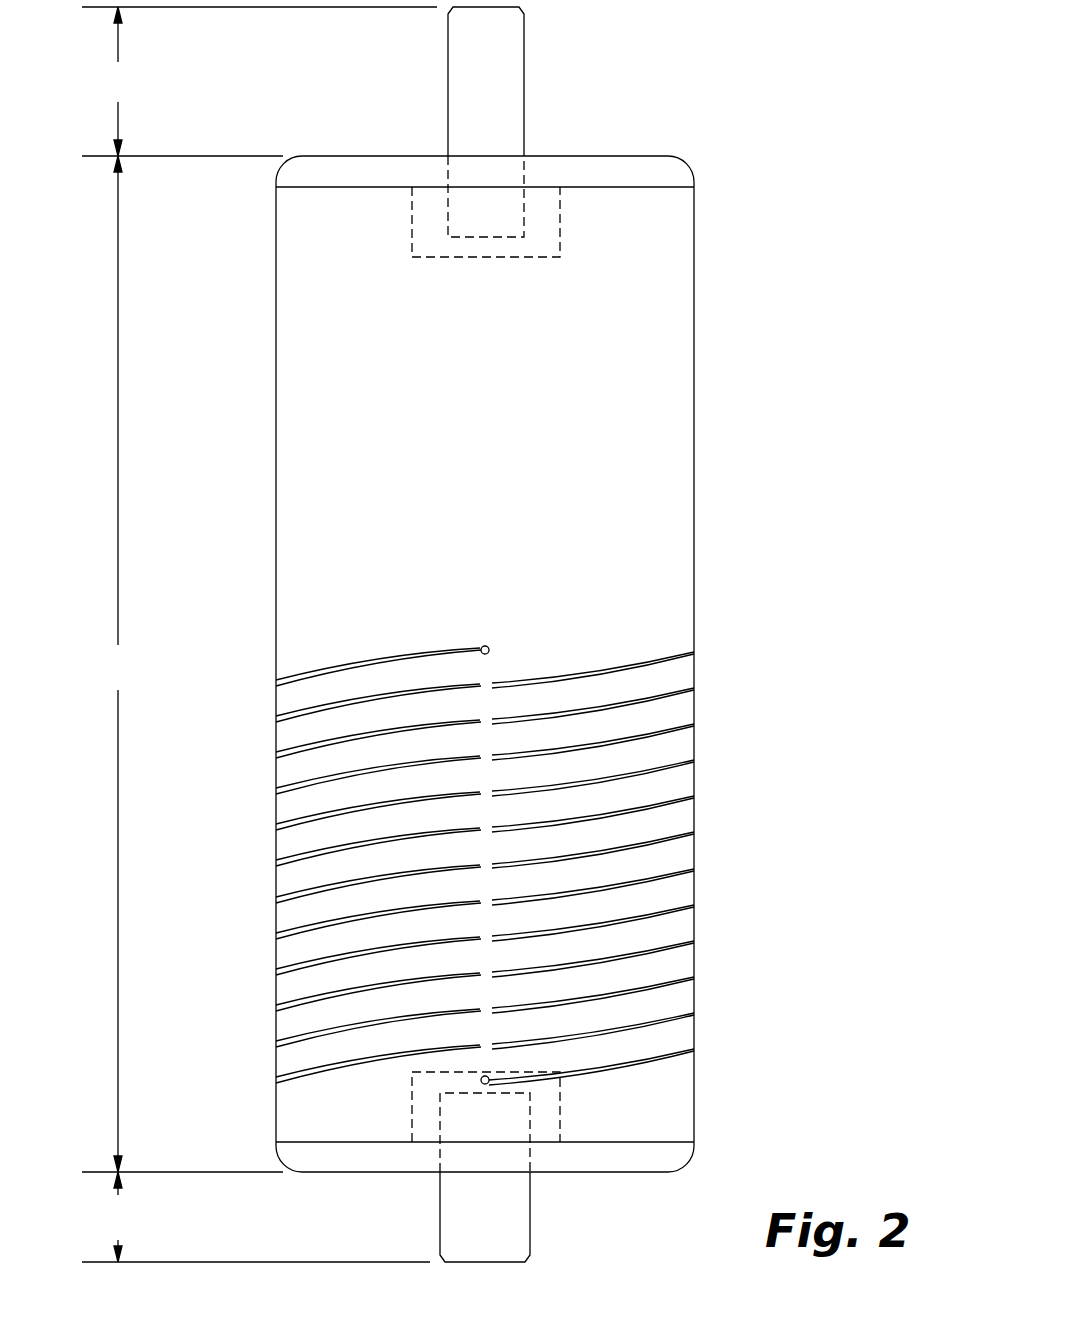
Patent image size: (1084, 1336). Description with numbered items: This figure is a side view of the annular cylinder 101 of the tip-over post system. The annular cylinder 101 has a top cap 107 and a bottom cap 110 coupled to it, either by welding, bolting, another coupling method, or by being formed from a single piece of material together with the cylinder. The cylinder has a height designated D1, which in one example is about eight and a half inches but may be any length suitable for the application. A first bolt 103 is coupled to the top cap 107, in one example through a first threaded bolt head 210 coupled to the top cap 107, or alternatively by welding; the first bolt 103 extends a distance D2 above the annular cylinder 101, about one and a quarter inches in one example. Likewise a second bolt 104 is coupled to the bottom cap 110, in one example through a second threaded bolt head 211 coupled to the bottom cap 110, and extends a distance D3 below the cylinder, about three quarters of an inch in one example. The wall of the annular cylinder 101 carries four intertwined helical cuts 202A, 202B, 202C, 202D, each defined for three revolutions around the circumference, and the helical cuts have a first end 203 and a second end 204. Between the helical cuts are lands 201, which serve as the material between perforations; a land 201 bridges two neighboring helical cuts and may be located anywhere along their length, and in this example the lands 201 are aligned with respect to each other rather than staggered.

The annular cylinder 101 is at (658, 294).
The first bolt 103 is at (480, 65).
The second bolt 104 is at (480, 1212).
The top cap 107 is at (392, 172).
The bottom cap 110 is at (378, 1157).
The lands 201 is at (488, 686).
The helical cut 202A is at (297, 673).
The helical cut 202B is at (297, 709).
The helical cut 202C is at (297, 744).
The helical cut 202D is at (297, 779).
The first end 203 is at (490, 1082).
The second end 204 is at (482, 650).
The first threaded bolt head 210 is at (562, 216).
The second threaded bolt head 211 is at (410, 1112).
The height of the annular cylinder D1 is at (114, 664).
The distance the first bolt extends above the annular cylinder D2 is at (259, 81).
The distance the second bolt extends below the annular cylinder D3 is at (256, 1217).